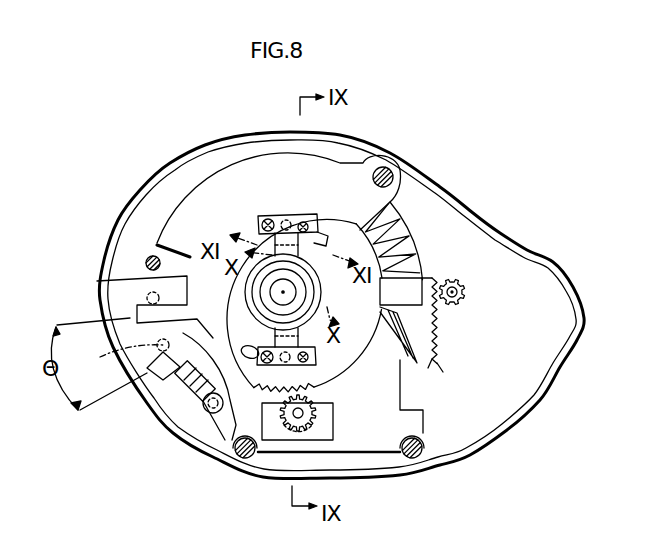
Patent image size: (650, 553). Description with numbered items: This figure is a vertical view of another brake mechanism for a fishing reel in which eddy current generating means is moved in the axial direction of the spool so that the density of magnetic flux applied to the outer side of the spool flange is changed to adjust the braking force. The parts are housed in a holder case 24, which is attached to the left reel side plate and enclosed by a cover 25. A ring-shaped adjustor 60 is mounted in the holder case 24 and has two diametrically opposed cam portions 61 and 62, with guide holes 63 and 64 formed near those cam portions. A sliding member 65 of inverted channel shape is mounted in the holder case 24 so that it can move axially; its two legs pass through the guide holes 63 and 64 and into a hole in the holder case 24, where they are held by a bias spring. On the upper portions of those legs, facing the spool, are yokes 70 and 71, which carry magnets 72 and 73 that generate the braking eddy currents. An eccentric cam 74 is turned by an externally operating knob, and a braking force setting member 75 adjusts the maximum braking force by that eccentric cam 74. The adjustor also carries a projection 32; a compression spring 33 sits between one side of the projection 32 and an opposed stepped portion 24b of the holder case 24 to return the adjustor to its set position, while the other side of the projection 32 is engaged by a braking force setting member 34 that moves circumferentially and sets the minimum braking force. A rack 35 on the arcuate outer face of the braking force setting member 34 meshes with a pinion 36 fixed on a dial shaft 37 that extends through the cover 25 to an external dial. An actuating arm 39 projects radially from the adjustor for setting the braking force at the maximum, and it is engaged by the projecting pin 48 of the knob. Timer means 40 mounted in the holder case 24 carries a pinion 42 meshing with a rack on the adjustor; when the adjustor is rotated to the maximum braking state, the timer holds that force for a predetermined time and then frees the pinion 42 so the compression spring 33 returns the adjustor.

The holder case 24 is at (215, 175).
The stepped portion of the holder case 24b is at (402, 232).
The cover 25 is at (550, 378).
The projection 32 is at (423, 360).
The compression spring 33 is at (420, 266).
The braking force setting member 34 is at (438, 318).
The rack 35 is at (437, 345).
The pinion 36 is at (466, 296).
The dial shaft 37 is at (458, 286).
The actuating arm 39 is at (107, 364).
The timer means 40 is at (330, 432).
The pinion 42 is at (297, 425).
The projecting pin 48 is at (147, 262).
The ring-shaped adjustor 60 is at (130, 285).
The cam portion 61 is at (383, 220).
The cam portion 62 is at (147, 405).
The guide hole 63 is at (318, 260).
The guide hole 64 is at (246, 349).
The sliding member 65 is at (247, 210).
The yoke 70 is at (287, 216).
The yoke 71 is at (232, 440).
The magnet 72 is at (307, 222).
The magnet 73 is at (300, 362).
The eccentric cam 74 is at (208, 414).
The braking force setting member 75 is at (180, 418).